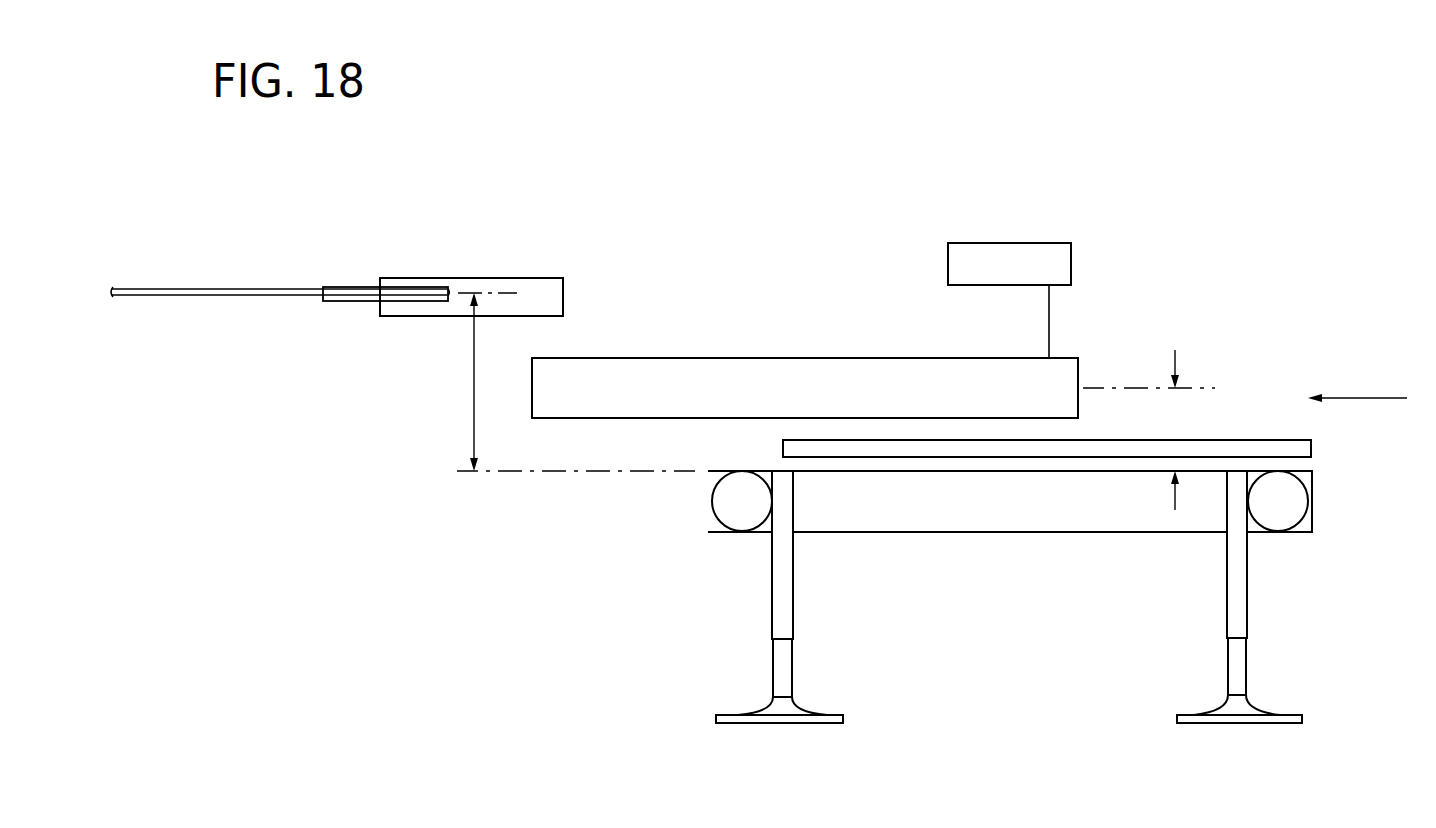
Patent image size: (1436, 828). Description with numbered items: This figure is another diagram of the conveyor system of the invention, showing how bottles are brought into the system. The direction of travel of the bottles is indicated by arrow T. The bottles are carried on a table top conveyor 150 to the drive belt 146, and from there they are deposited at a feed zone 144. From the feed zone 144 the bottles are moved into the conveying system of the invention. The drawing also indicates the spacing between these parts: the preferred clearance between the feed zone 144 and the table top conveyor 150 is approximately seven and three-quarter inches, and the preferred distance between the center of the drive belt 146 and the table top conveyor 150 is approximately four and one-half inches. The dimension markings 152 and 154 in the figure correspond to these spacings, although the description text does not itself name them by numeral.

The feed zone 144 is at (489, 278).
The drive belt 146 is at (686, 358).
The table top conveyor 150 is at (1304, 446).
The vertical distance 152 is at (474, 392).
The gap adjustment 154 is at (1180, 417).
The arrow T is at (1363, 398).